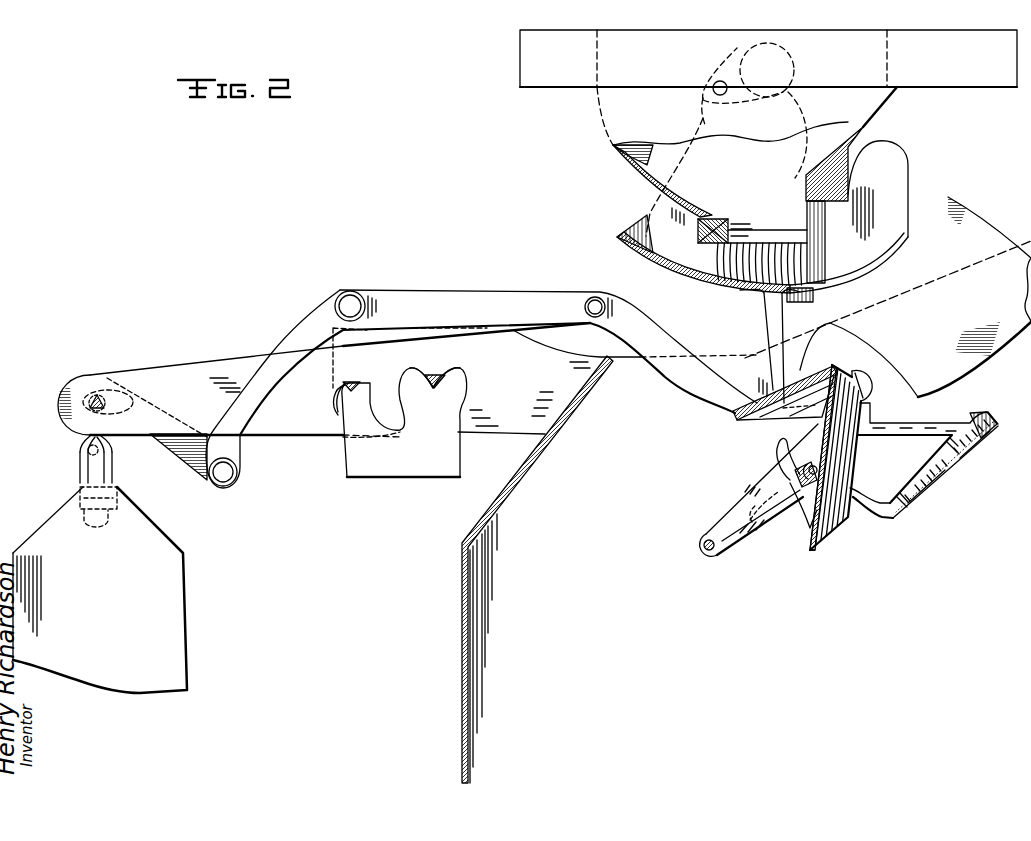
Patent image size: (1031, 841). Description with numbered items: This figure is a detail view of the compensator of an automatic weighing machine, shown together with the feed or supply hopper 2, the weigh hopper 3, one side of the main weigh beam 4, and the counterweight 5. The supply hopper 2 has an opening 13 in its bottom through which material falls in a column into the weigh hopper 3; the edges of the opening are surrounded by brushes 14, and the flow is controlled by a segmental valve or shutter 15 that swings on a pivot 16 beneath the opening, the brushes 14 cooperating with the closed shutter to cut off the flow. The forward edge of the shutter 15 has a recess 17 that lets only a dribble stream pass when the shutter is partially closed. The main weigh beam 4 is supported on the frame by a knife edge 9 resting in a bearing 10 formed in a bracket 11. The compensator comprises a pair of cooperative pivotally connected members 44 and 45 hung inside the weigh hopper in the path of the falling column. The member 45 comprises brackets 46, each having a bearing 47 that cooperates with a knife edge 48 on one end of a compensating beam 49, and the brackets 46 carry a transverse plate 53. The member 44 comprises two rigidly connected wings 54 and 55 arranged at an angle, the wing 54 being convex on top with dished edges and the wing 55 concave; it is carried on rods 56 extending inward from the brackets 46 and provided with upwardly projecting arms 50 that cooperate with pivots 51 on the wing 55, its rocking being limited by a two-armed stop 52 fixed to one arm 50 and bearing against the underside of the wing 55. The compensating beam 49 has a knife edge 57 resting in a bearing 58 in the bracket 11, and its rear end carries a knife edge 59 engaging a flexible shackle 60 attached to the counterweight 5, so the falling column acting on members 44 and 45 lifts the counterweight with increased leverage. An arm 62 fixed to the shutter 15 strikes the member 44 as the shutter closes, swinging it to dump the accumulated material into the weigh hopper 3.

The feed or supply hopper 2 is at (616, 155).
The weigh hopper 3 is at (462, 580).
The main weigh beam 4 is at (196, 372).
The counterweight 5 is at (188, 565).
The knife edge 9 is at (437, 375).
The bearing 10 is at (447, 388).
The bracket 11 is at (400, 465).
The opening 13 is at (800, 232).
The brushes 14 is at (722, 268).
The valve or shutter 15 is at (687, 283).
The pivot 16 is at (796, 60).
The recess 17 is at (860, 270).
The member 44 is at (829, 550).
The member 45 is at (930, 497).
The brackets 46 is at (942, 423).
The bearing 47 is at (850, 376).
The knife edge 48 is at (866, 394).
The compensating beam 49 is at (534, 291).
The arms 50 is at (798, 452).
The pivots 51 is at (818, 470).
The two-armed stop 52 is at (775, 461).
The plate 53 is at (950, 462).
The wing 54 is at (746, 423).
The wing 55 is at (808, 550).
The rods 56 is at (700, 546).
The knife edge 57 is at (356, 384).
The bearing 58 is at (344, 392).
The knife edge 59 is at (100, 411).
The flexible shackle 60 is at (72, 377).
The arm 62 is at (780, 377).